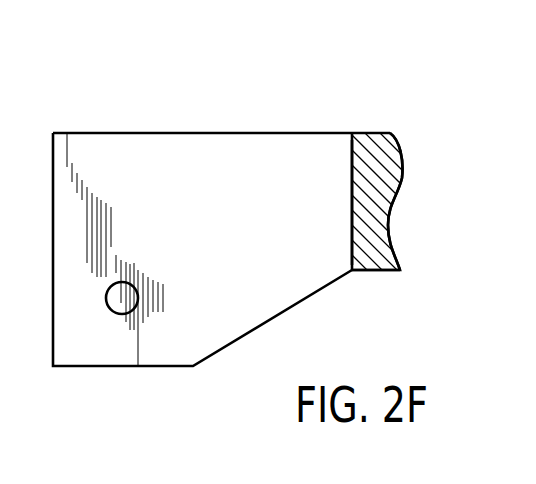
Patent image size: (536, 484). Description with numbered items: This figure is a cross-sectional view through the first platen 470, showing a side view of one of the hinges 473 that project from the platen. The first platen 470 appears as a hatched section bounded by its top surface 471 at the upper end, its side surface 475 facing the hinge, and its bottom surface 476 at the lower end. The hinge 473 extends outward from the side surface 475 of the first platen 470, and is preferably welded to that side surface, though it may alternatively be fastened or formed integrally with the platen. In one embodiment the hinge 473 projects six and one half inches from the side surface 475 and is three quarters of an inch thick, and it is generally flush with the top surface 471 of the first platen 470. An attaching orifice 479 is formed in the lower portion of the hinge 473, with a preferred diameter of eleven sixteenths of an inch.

The first platen 470 is at (387, 200).
The top surface 471 is at (373, 133).
The hinge 473 is at (196, 143).
The side surface 475 is at (349, 162).
The bottom surface 476 is at (377, 262).
The attaching orifice 479 is at (122, 305).